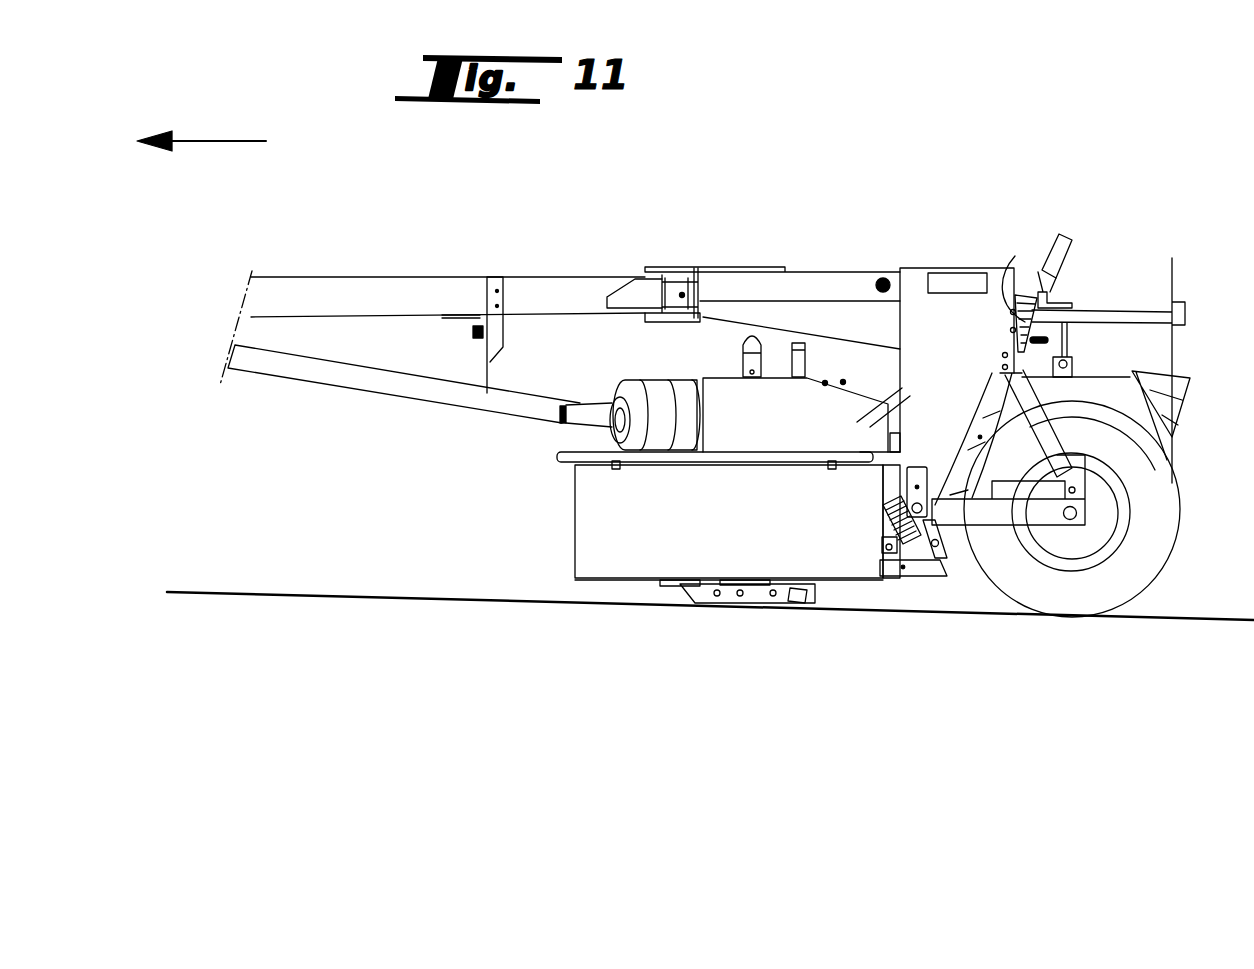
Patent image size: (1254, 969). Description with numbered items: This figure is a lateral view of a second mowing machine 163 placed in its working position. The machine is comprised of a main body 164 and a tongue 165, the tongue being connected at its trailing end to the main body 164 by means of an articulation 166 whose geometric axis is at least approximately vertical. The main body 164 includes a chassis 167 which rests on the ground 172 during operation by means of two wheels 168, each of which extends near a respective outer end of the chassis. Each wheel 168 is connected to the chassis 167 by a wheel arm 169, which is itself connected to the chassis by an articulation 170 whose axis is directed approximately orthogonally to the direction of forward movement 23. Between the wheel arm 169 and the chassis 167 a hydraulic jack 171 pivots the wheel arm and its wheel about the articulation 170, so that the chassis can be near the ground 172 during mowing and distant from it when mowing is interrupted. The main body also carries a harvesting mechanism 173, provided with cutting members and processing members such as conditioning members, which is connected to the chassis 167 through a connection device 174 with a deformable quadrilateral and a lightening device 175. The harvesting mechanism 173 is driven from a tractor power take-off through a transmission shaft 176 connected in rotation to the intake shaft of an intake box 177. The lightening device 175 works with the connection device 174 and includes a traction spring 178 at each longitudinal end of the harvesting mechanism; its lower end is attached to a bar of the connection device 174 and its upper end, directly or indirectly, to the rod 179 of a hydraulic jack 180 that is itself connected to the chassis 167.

The direction of forward movement 23 is at (226, 141).
The second mowing machine 163 is at (770, 200).
The main body 164 is at (572, 462).
The tongue 165 is at (359, 276).
The articulation 166 is at (678, 268).
The chassis 167 is at (960, 267).
The wheel 168 is at (1157, 553).
The wheel arm 169 is at (988, 517).
The articulation 170 is at (919, 518).
The hydraulic jack 171 is at (1040, 427).
The ground 172 is at (318, 596).
The harvesting mechanism 173 is at (728, 598).
The connection device 174 is at (864, 418).
The lightening device 175 is at (1048, 341).
The transmission shaft 176 is at (312, 377).
The intake box 177 is at (698, 388).
The traction spring 178 is at (1012, 268).
The rod 179 is at (1028, 340).
The hydraulic jack 180 is at (1070, 240).